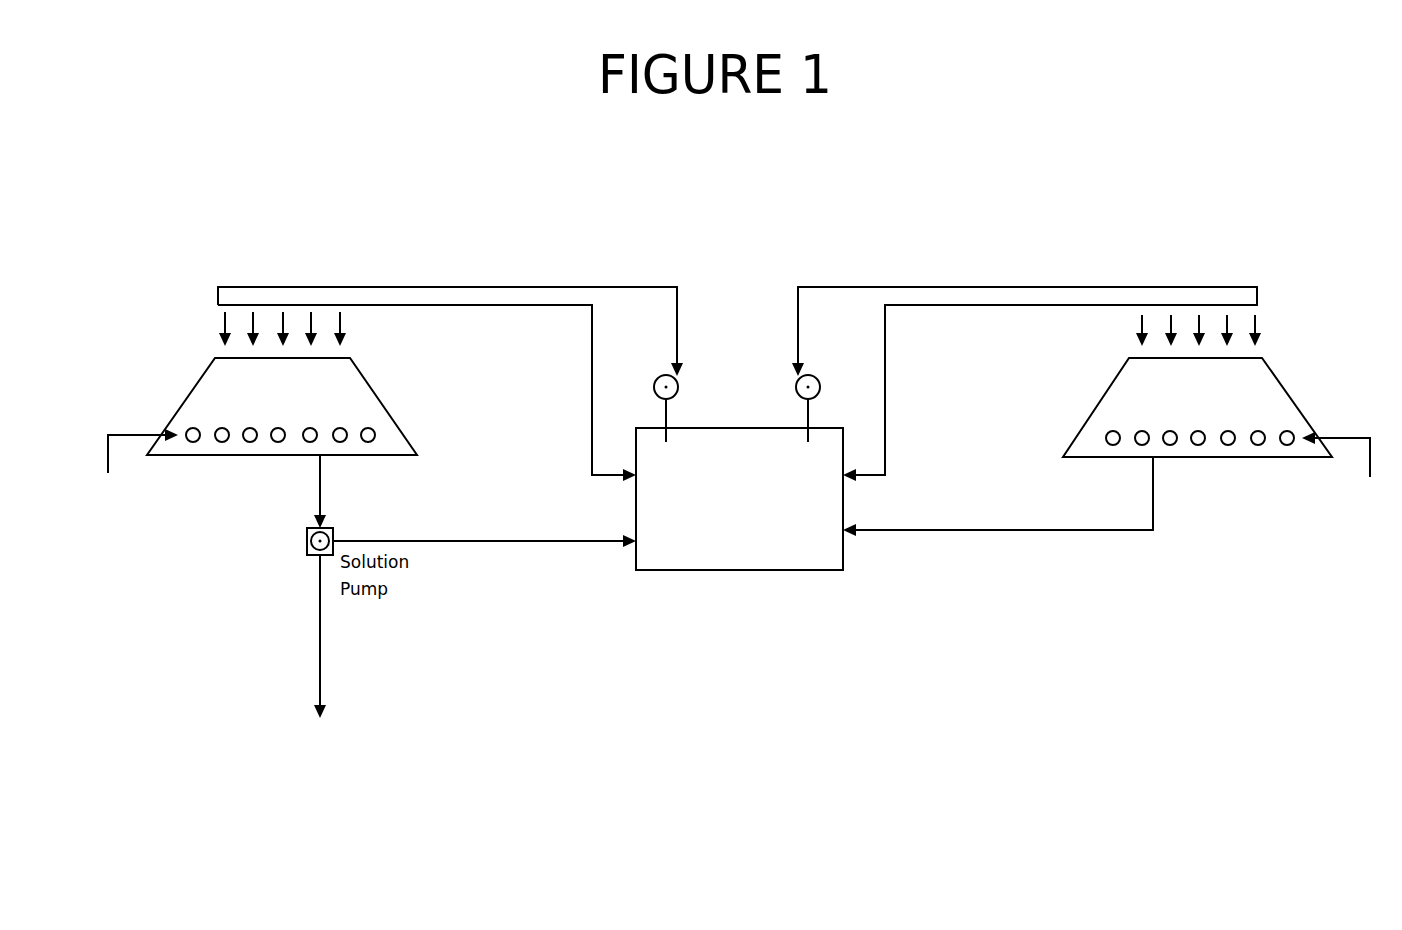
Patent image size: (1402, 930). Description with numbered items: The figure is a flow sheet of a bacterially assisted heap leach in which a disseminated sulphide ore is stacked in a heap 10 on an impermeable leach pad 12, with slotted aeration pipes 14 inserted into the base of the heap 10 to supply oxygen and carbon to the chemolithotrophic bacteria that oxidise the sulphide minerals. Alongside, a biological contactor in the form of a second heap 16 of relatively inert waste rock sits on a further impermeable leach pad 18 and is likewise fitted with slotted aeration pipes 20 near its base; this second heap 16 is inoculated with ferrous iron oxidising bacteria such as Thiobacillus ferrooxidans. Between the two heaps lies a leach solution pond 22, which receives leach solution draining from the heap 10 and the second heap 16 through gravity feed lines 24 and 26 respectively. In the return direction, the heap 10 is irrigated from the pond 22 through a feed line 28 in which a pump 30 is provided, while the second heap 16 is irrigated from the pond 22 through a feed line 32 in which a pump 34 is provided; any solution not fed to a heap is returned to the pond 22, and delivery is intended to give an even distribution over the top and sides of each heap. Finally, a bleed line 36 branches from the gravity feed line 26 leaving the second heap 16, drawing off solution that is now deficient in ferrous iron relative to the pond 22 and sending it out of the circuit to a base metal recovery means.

The heap 10 is at (1296, 390).
The impermeable leach pad 12 is at (1085, 457).
The slotted aeration pipes 14 is at (1228, 445).
The second heap 16 is at (190, 380).
The further impermeable leach pad 18 is at (365, 456).
The slotted aeration pipes 20 is at (222, 443).
The leach solution pond 22 is at (797, 545).
The gravity feed line 24 is at (942, 530).
The gravity feed line 26 is at (485, 543).
The feed line 28 is at (1057, 287).
The pump 30 is at (798, 382).
The feed line 32 is at (502, 287).
The pump 34 is at (677, 383).
The bleed line 36 is at (320, 622).